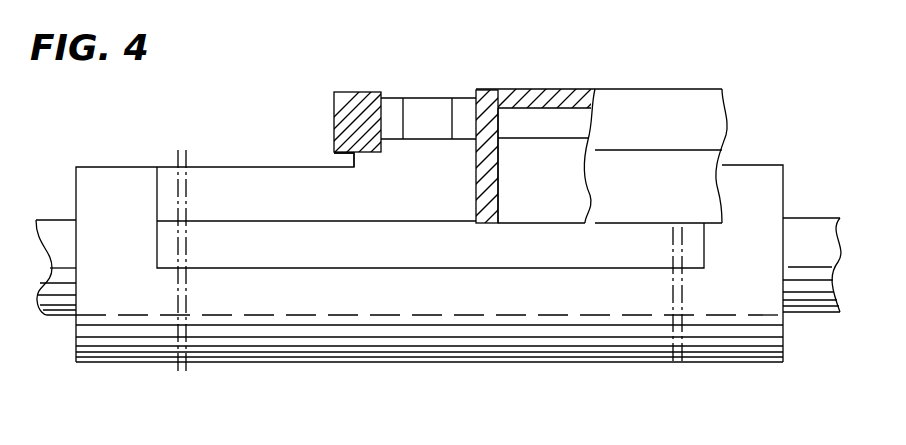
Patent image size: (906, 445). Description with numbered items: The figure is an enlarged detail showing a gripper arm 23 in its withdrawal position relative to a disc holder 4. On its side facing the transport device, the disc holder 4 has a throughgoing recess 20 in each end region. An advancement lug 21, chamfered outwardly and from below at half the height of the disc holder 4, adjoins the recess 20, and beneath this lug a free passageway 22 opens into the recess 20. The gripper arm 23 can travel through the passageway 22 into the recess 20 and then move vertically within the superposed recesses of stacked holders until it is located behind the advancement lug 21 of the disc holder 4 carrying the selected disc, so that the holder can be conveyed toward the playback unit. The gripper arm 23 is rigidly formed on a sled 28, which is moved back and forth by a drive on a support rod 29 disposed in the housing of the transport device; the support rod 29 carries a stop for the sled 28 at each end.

The disc holder 4 is at (551, 89).
The throughgoing recess 20 is at (476, 171).
The advancement lug 21 is at (358, 94).
The free passageway 22 is at (342, 160).
The gripper arm 23 is at (415, 108).
The sled 28 is at (473, 325).
The support rod 29 is at (812, 306).